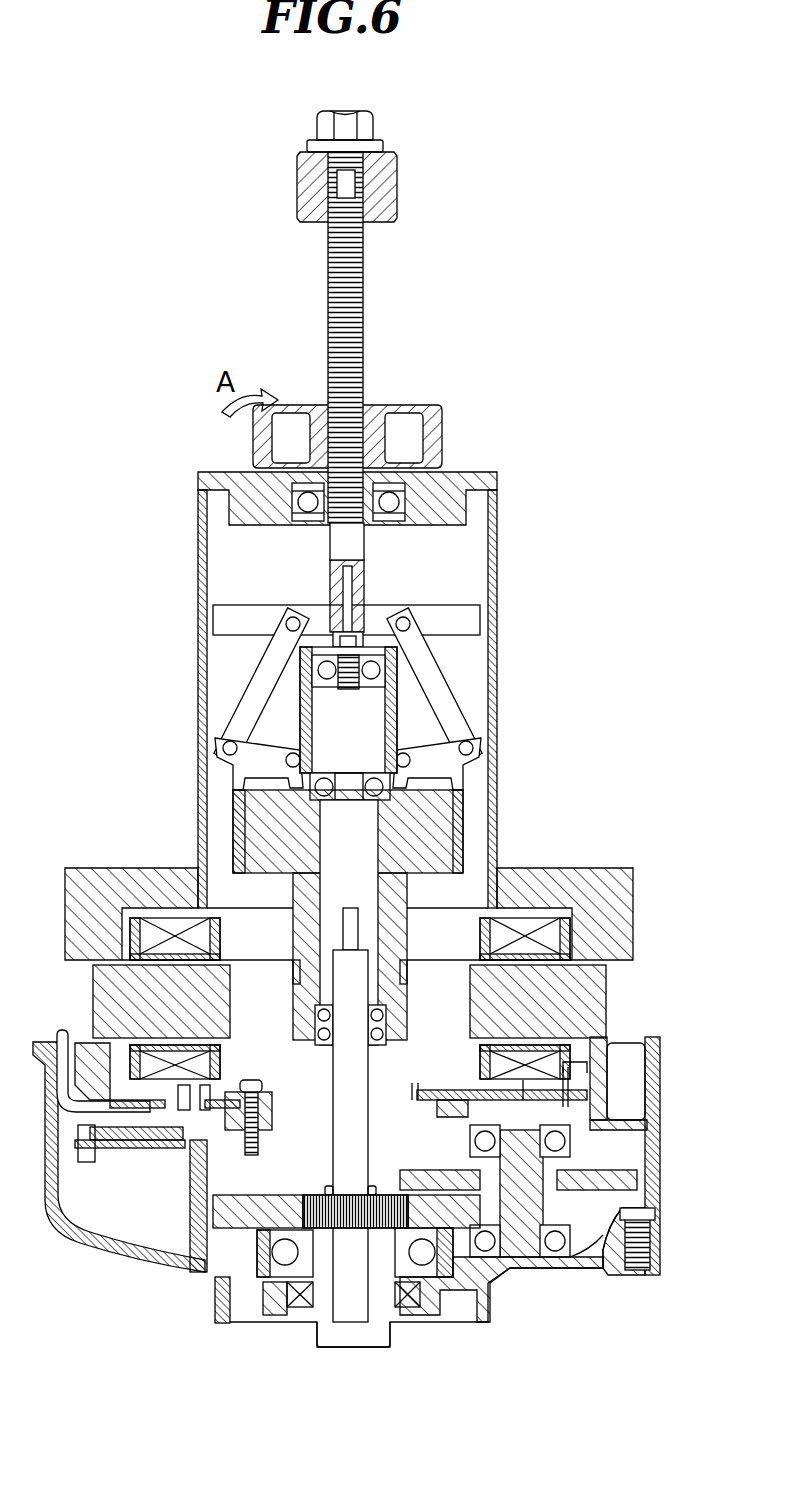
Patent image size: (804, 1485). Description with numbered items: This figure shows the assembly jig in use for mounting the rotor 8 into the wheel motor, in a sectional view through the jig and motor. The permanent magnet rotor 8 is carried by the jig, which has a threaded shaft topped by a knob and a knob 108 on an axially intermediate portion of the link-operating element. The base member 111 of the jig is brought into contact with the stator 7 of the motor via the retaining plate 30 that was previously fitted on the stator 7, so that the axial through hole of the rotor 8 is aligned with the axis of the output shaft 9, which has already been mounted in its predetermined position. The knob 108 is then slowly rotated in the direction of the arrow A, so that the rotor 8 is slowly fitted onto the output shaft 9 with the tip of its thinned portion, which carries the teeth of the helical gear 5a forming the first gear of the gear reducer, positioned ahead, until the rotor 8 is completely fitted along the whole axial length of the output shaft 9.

The knob 108 is at (443, 437).
The permanent magnet rotor 8 is at (447, 783).
The base member 111 is at (622, 938).
The retaining plate 30 is at (592, 949).
The stator 7 is at (598, 998).
The helical gear 5a is at (387, 1013).
The output shaft 9 is at (363, 1080).